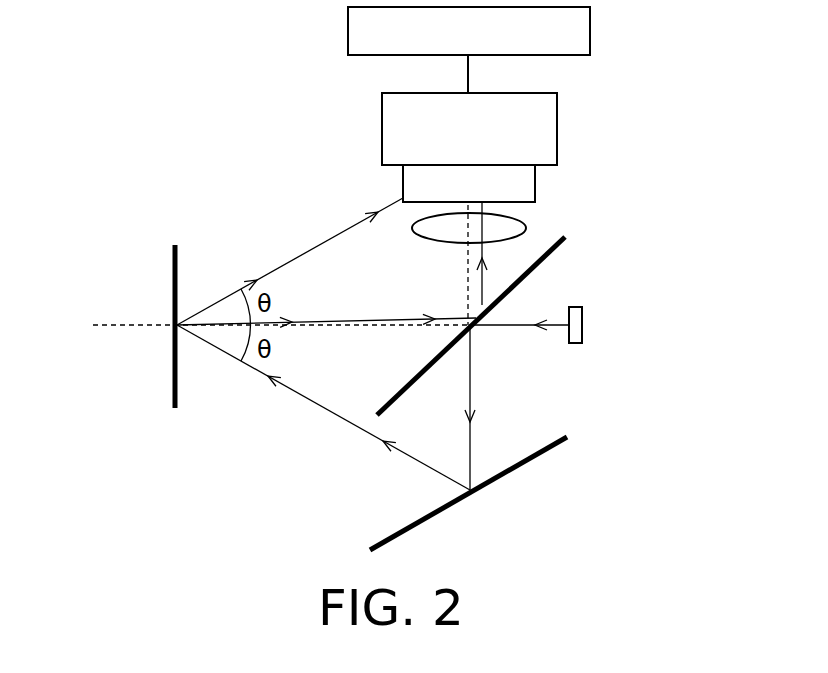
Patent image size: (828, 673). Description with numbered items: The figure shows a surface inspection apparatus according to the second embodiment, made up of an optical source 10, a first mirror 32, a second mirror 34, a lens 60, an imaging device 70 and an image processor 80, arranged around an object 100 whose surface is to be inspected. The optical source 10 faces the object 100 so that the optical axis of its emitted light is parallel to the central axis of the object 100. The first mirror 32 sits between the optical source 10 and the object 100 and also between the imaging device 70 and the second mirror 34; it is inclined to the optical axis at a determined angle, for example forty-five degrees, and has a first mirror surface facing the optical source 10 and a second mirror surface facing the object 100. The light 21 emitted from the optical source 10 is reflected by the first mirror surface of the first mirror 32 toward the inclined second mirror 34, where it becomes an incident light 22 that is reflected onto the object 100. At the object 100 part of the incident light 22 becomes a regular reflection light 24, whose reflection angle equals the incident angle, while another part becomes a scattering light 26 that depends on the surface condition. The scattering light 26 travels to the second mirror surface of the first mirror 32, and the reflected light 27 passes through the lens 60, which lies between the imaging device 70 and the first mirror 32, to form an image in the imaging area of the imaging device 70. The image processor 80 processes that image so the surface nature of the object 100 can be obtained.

The optical source 10 is at (578, 343).
The light 21 is at (515, 325).
The incident light 22 is at (308, 403).
The regular reflection light 24 is at (302, 254).
The scattering light 26 is at (352, 320).
The light 27 is at (481, 279).
The first mirror 32 is at (545, 245).
The second mirror 34 is at (523, 465).
The lens 60 is at (520, 221).
The imaging device 70 is at (557, 126).
The image processor 80 is at (590, 31).
The object 100 is at (172, 265).